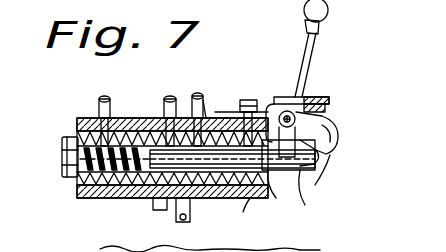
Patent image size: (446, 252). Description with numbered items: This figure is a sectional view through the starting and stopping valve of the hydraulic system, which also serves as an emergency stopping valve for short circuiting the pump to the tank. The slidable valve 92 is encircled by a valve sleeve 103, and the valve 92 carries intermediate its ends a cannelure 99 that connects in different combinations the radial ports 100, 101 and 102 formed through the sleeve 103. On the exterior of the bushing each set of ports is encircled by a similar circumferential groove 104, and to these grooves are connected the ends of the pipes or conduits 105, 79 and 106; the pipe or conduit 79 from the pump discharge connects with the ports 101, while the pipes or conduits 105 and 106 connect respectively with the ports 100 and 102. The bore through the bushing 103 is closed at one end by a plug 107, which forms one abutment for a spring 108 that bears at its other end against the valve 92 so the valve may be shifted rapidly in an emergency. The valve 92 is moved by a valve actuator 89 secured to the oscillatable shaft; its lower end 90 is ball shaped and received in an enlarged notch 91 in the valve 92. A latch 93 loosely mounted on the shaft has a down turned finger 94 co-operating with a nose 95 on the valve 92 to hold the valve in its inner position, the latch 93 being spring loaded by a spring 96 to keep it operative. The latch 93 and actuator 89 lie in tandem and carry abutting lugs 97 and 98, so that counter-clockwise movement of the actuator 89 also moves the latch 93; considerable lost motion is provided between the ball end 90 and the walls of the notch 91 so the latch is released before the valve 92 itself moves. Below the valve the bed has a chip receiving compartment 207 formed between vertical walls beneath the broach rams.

The pipe or conduit 79 is at (182, 224).
The valve actuator 89 is at (317, 176).
The ball shaped lower end 90 is at (281, 170).
The enlarged notch 91 is at (295, 199).
The slidable valve 92 is at (243, 215).
The latch 93 is at (340, 124).
The down turned finger 94 is at (335, 148).
The nose 95 is at (345, 135).
The spring 96 is at (330, 113).
The abutting lug 97 is at (300, 100).
The abutting lug 98 is at (285, 97).
The cannelure 99 is at (163, 198).
The radial ports 100 is at (160, 118).
The radial ports 101 is at (193, 95).
The radial ports 102 is at (217, 117).
The valve sleeve 103 is at (90, 200).
The circumferential groove 104 is at (160, 180).
The pipe or conduit 105 is at (108, 98).
The pipe or conduit 106 is at (200, 94).
The plug 107 is at (62, 160).
The spring 108 is at (77, 122).
The chip receiving compartment 207 is at (247, 251).